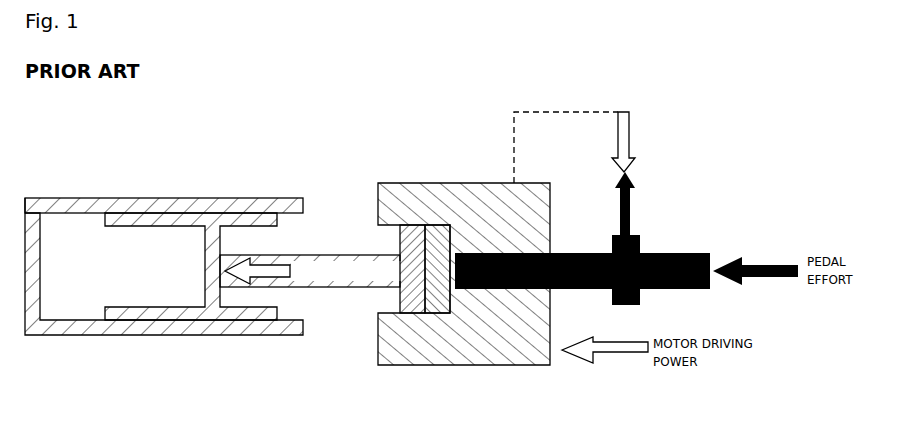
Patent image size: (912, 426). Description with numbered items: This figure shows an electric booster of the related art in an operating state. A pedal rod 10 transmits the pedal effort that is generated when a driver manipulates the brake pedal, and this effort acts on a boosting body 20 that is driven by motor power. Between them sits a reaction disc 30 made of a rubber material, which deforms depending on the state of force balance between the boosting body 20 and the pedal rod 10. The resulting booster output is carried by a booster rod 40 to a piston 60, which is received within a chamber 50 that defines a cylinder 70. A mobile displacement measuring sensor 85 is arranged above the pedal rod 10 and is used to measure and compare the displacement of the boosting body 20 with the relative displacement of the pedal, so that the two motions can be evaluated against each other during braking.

The pedal rod 10 is at (672, 253).
The boosting body 20 is at (378, 350).
The reaction disc 30 is at (438, 235).
The booster rod 40 is at (349, 252).
The chamber 50 is at (258, 200).
The piston 60 is at (193, 308).
The cylinder 70 is at (80, 290).
The mobile displacement measuring sensor 85 is at (627, 172).